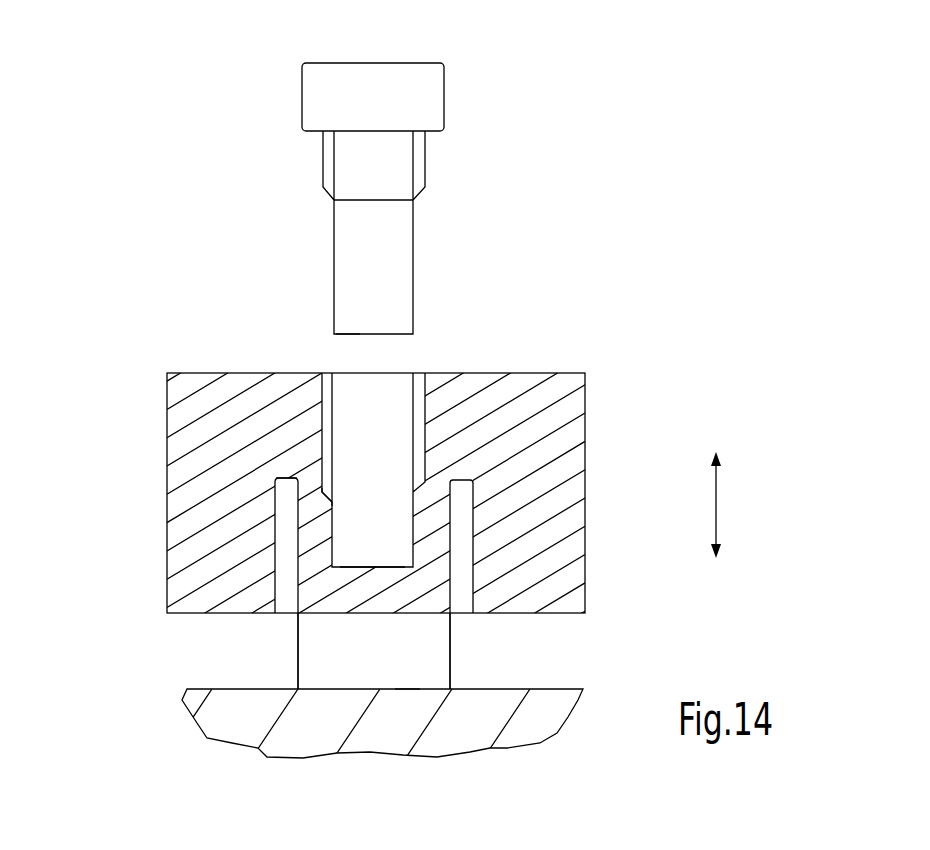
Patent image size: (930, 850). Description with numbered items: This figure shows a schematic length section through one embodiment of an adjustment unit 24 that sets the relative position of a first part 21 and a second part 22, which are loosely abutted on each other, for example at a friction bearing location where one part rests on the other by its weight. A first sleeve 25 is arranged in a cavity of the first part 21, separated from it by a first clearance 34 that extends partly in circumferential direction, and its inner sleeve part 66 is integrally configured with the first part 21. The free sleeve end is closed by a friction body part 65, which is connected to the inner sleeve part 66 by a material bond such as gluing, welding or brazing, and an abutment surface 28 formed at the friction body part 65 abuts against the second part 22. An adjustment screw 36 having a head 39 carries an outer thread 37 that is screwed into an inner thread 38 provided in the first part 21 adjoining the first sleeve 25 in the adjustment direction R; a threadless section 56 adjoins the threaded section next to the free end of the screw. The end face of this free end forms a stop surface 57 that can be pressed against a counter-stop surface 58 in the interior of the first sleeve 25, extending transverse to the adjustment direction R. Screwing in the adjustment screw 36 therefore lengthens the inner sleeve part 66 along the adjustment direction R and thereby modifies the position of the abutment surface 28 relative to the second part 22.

The first part 21 is at (568, 402).
The second part 22 is at (547, 707).
The adjustment unit 24 is at (622, 178).
The first sleeve 25 is at (282, 512).
The abutment surface 28 is at (408, 702).
The first clearance 34 is at (283, 553).
The adjustment screw 36 is at (483, 130).
The outer thread 37 is at (322, 183).
The inner thread 38 is at (420, 382).
The head 39 is at (302, 88).
The threadless section 56 is at (393, 273).
The stop surface 57 is at (340, 340).
The counter-stop surface 58 is at (394, 550).
The friction body part 65 is at (428, 650).
The inner sleeve part 66 is at (317, 532).
The adjustment direction R is at (716, 492).